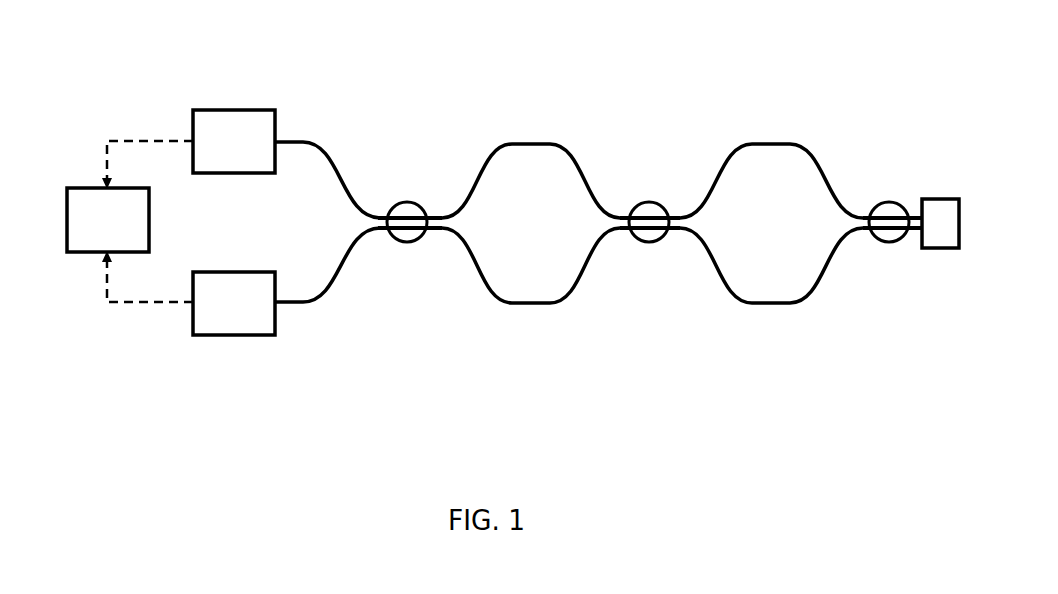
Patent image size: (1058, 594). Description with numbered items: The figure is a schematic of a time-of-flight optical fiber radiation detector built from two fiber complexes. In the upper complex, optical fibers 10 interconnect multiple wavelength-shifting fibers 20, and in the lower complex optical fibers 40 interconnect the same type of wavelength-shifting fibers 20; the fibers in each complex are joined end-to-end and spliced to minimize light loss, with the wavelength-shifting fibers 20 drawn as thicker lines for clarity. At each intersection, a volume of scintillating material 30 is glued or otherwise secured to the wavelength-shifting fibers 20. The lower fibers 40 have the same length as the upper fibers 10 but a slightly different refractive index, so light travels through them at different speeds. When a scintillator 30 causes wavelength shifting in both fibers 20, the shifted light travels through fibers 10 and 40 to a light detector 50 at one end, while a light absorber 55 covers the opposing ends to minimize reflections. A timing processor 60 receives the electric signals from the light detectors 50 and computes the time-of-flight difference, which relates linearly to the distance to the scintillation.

The optical fibers 10 is at (550, 144).
The wavelength-shifting fibers 20 is at (385, 215).
The scintillating material 30 is at (408, 202).
The optical fibers 40 is at (558, 303).
The light detector 50 is at (234, 110).
The light absorber 55 is at (940, 199).
The timing processor 60 is at (85, 188).